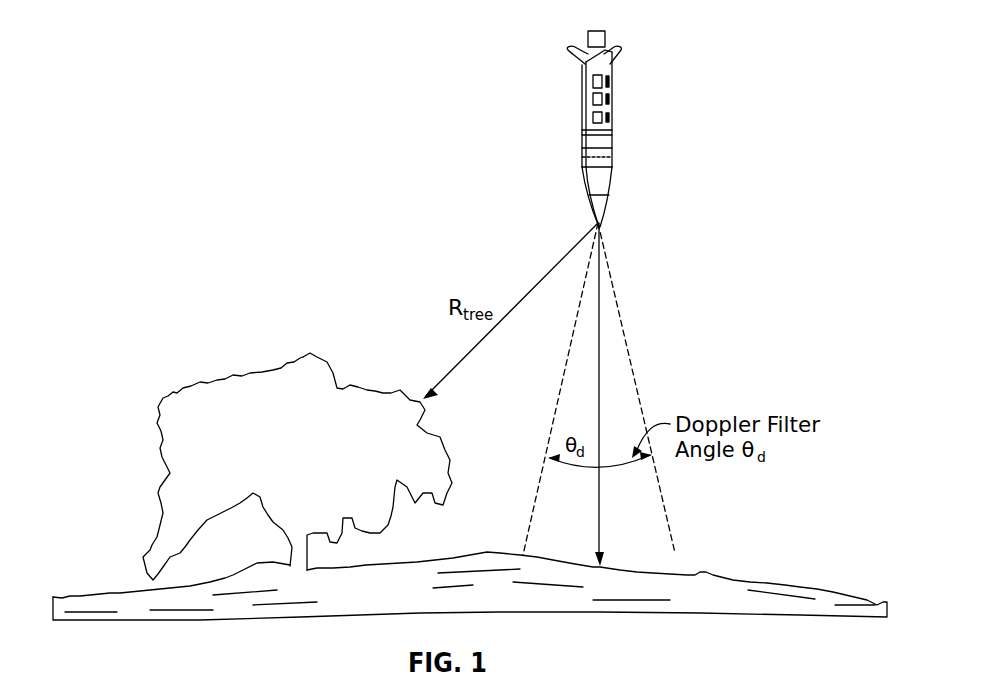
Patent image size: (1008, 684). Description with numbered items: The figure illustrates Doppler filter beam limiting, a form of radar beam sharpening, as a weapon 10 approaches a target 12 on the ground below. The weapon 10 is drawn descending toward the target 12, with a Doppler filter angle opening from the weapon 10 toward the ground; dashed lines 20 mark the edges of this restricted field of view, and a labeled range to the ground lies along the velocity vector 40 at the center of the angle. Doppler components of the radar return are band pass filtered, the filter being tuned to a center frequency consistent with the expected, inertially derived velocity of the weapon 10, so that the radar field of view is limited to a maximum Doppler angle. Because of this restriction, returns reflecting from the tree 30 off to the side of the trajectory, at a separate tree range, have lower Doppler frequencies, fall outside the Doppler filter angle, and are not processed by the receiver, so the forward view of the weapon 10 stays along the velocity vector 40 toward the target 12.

The weapon 10 is at (612, 123).
The target 12 is at (622, 567).
The Doppler filter beam boundary 20 is at (626, 331).
The tree 30 is at (303, 357).
The velocity vector 40 is at (599, 521).